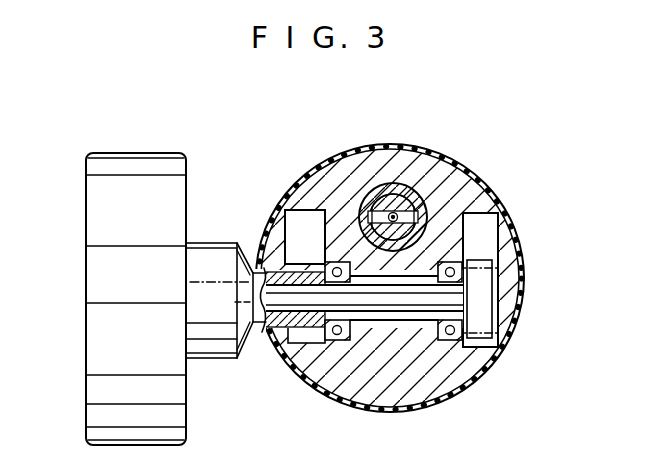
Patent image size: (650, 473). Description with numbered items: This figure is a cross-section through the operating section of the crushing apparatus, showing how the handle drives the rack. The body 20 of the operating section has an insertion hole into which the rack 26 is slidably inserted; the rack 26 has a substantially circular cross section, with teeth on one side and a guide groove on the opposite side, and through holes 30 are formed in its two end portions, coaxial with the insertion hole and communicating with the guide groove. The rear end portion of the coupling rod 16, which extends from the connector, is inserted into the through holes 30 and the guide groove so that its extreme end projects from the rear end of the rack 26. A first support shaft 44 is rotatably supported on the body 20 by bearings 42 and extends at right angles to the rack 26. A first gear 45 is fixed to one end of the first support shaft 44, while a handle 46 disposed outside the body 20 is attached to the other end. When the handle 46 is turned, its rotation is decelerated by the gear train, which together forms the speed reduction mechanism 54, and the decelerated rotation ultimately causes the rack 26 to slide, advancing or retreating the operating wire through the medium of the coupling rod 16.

The coupling rod 16 is at (392, 212).
The body 20 is at (452, 376).
The rack 26 is at (417, 180).
The through holes 30 is at (413, 232).
The bearings 42 is at (460, 262).
The first support shaft 44 is at (405, 312).
The first gear 45 is at (487, 318).
The handle 46 is at (90, 309).
The speed reduction mechanism 54 is at (433, 293).